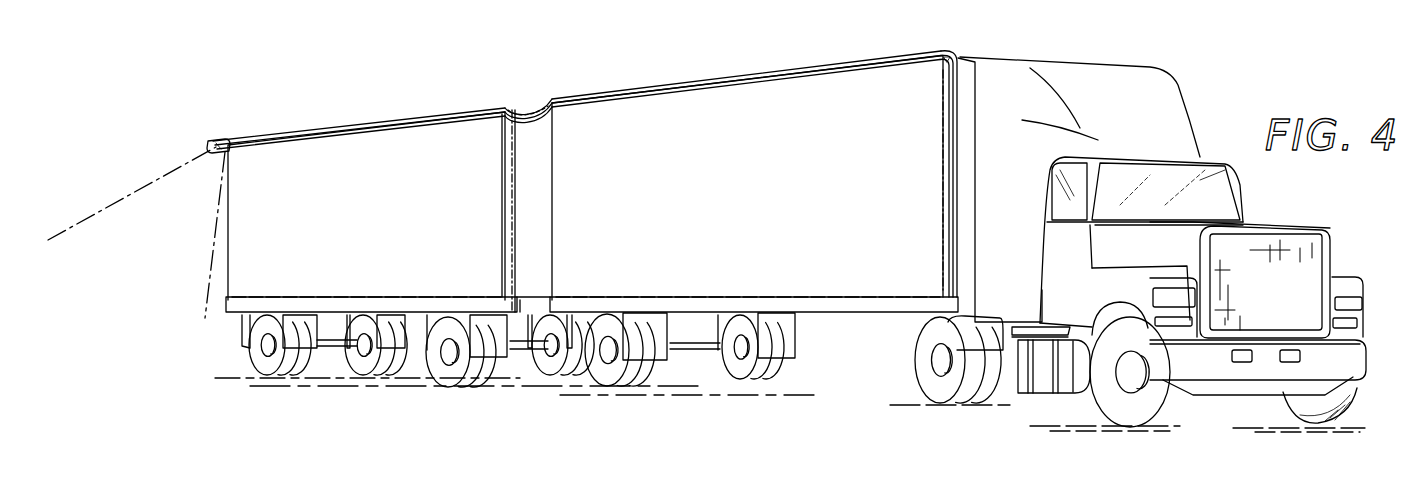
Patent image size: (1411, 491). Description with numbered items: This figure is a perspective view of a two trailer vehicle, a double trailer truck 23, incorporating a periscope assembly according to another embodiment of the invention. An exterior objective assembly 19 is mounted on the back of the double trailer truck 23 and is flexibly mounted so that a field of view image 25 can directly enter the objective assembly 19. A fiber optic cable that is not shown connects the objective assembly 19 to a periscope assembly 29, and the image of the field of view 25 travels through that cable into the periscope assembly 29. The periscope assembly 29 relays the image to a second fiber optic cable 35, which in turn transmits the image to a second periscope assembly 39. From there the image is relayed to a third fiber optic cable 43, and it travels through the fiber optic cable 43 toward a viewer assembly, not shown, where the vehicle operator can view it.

The exterior objective assembly 19 is at (234, 138).
The field of view image 25 is at (144, 186).
The periscope assembly 29 is at (385, 128).
The second fiber optic cable 35 is at (530, 108).
The second periscope assembly 39 is at (727, 88).
The third fiber optic cable 43 is at (961, 58).
The double trailer truck 23 is at (1268, 388).